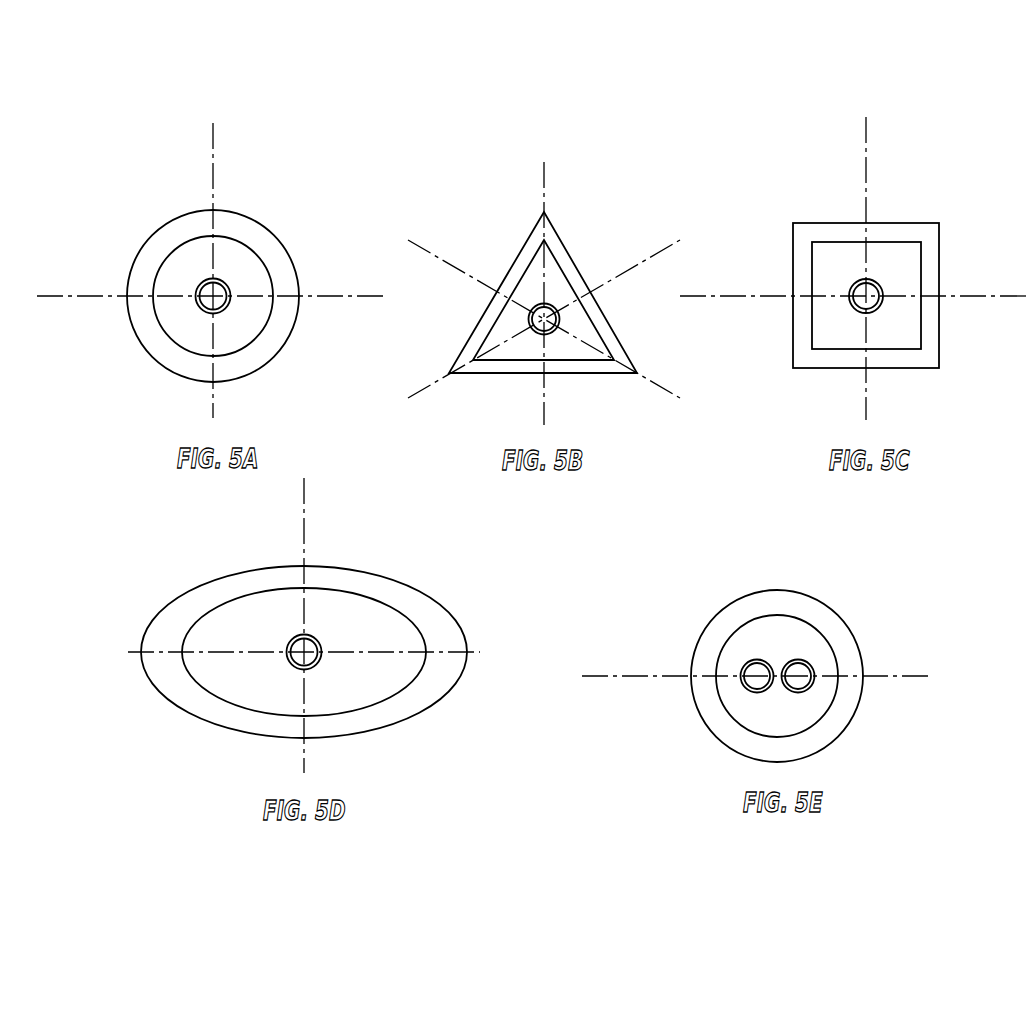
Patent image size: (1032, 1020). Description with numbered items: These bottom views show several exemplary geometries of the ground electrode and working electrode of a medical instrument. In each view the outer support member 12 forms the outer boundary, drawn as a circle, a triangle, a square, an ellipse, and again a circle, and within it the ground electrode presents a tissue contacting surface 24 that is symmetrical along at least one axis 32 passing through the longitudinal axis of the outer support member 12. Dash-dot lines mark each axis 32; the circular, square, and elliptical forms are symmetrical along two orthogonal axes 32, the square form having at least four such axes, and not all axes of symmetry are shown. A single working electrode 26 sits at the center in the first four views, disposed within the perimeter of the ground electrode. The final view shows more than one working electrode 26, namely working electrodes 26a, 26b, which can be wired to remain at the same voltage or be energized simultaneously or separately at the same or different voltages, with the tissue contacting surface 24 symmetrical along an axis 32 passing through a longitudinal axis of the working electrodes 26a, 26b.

In FIG. 5A, the outer support member 12 is at (194, 296).
In FIG. 5B, the outer support member 12 is at (543, 284).
In FIG. 5C, the outer support member 12 is at (882, 279).
In FIG. 5D, the outer support member 12 is at (304, 641).
In FIG. 5E, the outer support member 12 is at (777, 661).
In FIG. 5A, the tissue contacting surface 24 is at (232, 265).
In FIG. 5B, the tissue contacting surface 24 is at (543, 287).
In FIG. 5C, the tissue contacting surface 24 is at (861, 258).
In FIG. 5D, the tissue contacting surface 24 is at (342, 648).
In FIG. 5E, the tissue contacting surface 24 is at (791, 645).
In FIG. 5A, the working electrode 26 is at (174, 256).
In FIG. 5B, the working electrode 26 is at (575, 282).
In FIG. 5C, the working electrode 26 is at (881, 246).
In FIG. 5D, the working electrode 26 is at (264, 605).
In FIG. 5E, the working electrode 26a is at (830, 636).
In FIG. 5E, the working electrode 26b is at (864, 651).
In FIG. 5A, the axis of symmetry 32 is at (212, 267).
In FIG. 5B, the axis of symmetry 32 is at (560, 285).
In FIG. 5C, the axis of symmetry 32 is at (855, 264).
In FIG. 5D, the axis of symmetry 32 is at (323, 625).
In FIG. 5E, the axis of symmetry 32 is at (775, 663).